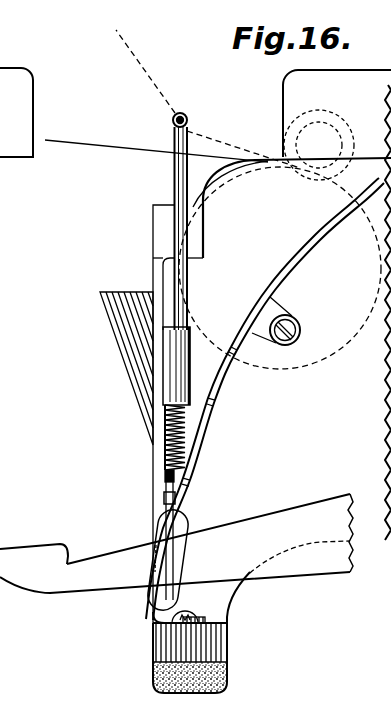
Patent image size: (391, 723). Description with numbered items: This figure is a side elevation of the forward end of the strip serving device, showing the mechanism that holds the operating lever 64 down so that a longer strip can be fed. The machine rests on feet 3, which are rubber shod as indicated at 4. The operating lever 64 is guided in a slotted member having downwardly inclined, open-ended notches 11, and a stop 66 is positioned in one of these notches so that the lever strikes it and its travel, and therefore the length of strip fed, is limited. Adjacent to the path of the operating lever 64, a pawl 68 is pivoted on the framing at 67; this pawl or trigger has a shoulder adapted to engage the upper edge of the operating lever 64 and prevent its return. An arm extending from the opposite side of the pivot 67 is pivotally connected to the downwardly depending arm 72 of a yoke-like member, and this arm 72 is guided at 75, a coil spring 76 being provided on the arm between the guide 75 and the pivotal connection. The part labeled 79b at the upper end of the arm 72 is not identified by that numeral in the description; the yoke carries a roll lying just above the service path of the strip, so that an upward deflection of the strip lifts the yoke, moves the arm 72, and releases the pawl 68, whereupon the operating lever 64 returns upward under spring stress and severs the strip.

The pin 79b is at (188, 115).
The downwardly depending arm of the yoke-like member 72 is at (176, 185).
The guide 75 is at (172, 380).
The coil spring 76 is at (167, 428).
The pivot 67 is at (166, 477).
The pawl 68 is at (166, 499).
The notches 11 is at (234, 360).
The operating lever 64 is at (94, 550).
The stop 66 is at (158, 563).
The feet 3 is at (157, 637).
The rubber shoes 4 is at (152, 670).